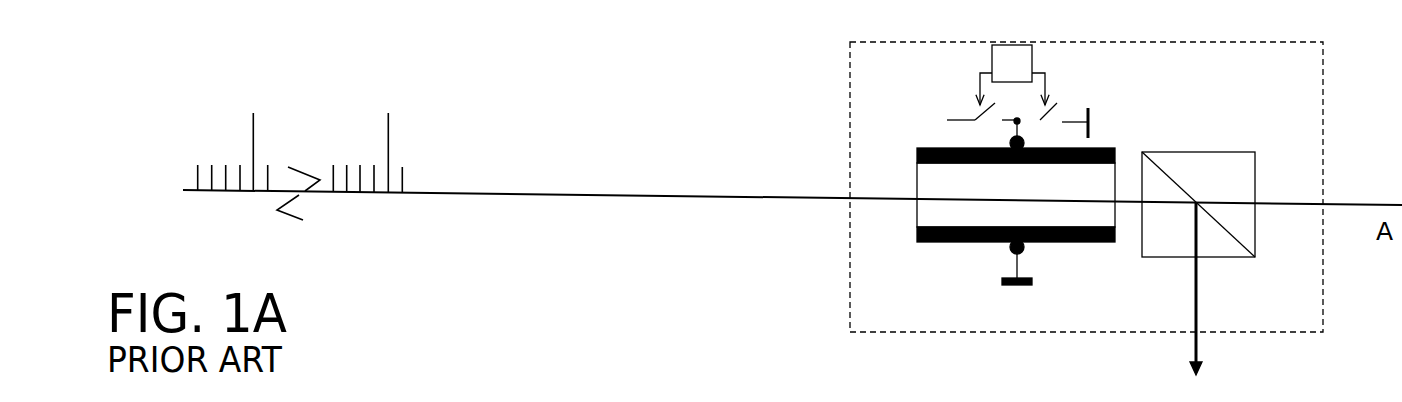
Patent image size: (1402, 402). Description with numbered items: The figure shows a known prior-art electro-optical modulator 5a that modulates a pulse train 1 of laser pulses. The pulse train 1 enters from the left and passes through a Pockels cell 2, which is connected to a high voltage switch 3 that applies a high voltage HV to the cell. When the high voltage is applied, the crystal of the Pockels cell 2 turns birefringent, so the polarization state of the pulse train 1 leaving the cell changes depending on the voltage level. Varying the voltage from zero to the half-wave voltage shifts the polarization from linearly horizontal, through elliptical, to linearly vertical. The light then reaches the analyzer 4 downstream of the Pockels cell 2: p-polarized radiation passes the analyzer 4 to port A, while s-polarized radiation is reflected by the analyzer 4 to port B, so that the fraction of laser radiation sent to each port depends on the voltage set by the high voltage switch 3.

The pulse train 1 is at (340, 197).
The Pockels cell 2 is at (915, 207).
The high voltage switch 3 is at (995, 94).
The analyzer 4 is at (1230, 243).
The electro-optical modulator 5a is at (1272, 310).